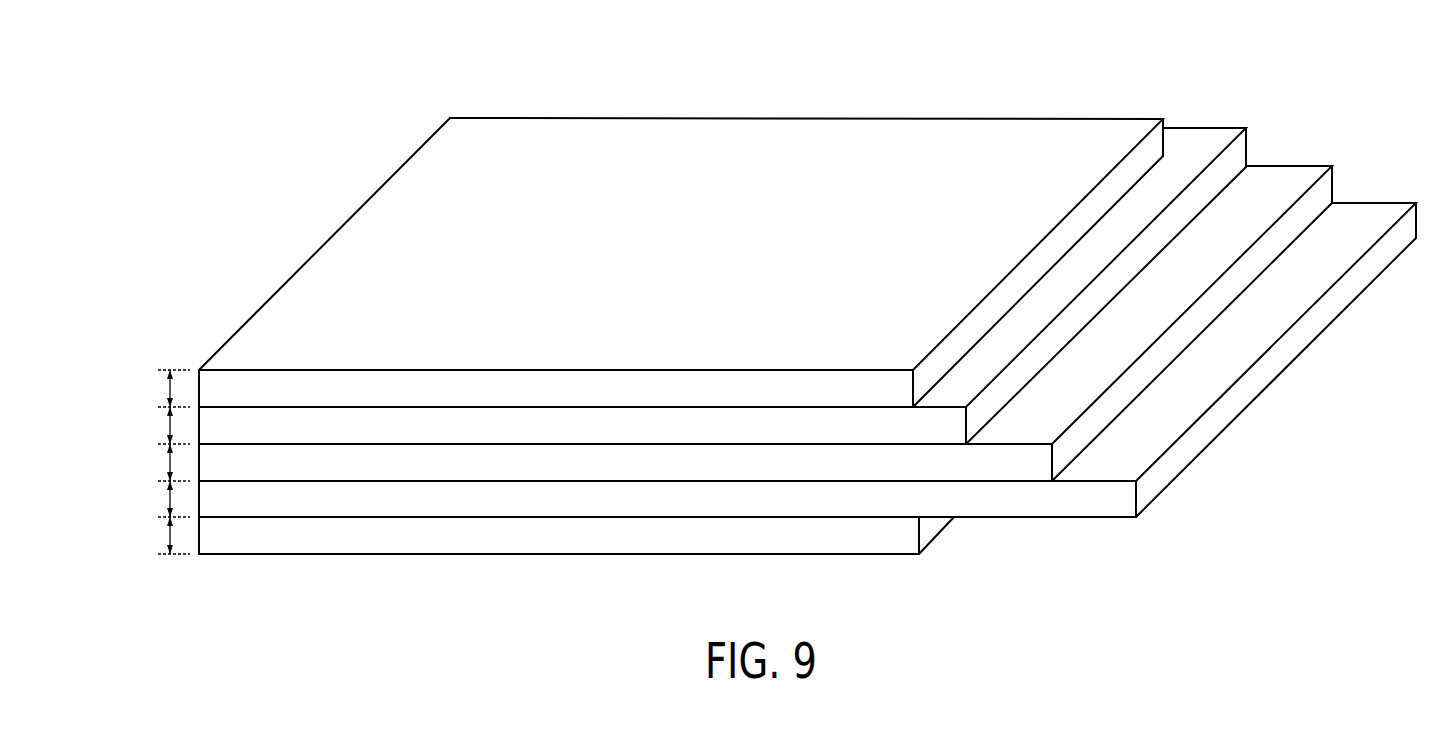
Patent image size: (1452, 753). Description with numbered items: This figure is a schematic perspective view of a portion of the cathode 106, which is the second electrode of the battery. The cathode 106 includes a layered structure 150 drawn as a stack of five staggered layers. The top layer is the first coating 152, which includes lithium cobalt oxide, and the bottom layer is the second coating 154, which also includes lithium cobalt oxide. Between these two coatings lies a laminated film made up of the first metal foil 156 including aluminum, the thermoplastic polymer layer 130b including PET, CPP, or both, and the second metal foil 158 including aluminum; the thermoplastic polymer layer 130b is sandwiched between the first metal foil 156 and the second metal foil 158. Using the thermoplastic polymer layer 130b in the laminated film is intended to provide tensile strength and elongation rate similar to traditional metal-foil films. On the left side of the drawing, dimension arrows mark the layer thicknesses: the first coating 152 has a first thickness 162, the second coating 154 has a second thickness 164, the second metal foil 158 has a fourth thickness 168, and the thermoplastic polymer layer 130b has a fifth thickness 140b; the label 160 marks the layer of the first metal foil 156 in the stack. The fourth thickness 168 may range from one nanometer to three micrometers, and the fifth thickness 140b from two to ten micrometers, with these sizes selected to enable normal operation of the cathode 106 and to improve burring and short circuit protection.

The cathode 106 is at (1140, 73).
The layered structure 150 is at (290, 218).
The first thickness 162 is at (167, 389).
The first interlayer 160 is at (167, 426).
The fifth thickness 140b is at (167, 464).
The fourth thickness 168 is at (167, 501).
The second thickness 164 is at (167, 537).
The first coating 152 is at (1150, 147).
The first metal foil 156 is at (1233, 159).
The thermoplastic polymer layer 130b is at (1318, 195).
The second metal foil 158 is at (1318, 323).
The second coating 154 is at (930, 528).